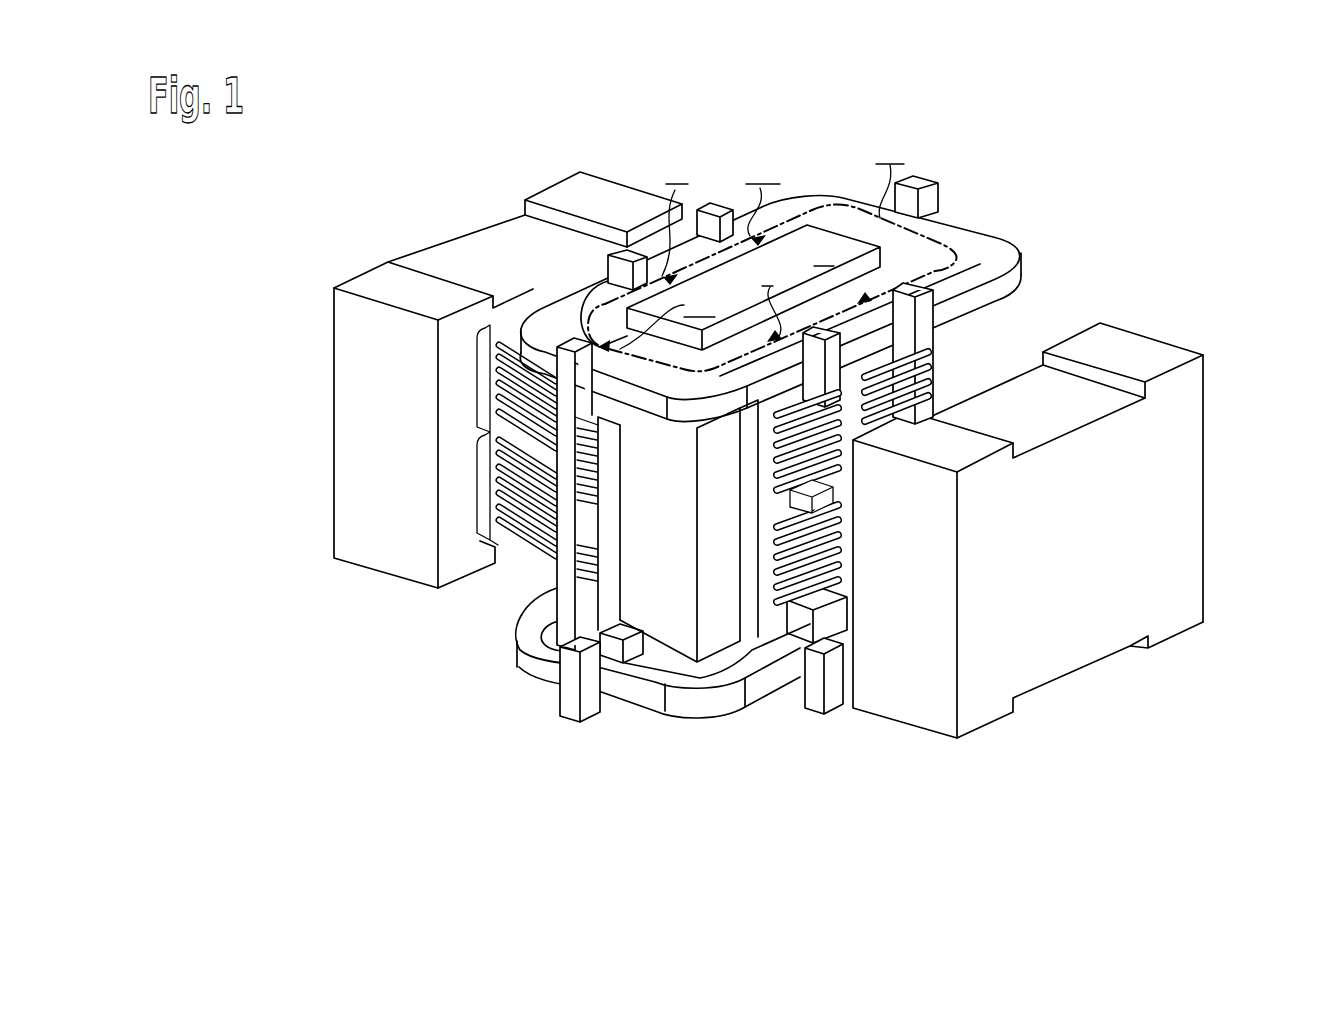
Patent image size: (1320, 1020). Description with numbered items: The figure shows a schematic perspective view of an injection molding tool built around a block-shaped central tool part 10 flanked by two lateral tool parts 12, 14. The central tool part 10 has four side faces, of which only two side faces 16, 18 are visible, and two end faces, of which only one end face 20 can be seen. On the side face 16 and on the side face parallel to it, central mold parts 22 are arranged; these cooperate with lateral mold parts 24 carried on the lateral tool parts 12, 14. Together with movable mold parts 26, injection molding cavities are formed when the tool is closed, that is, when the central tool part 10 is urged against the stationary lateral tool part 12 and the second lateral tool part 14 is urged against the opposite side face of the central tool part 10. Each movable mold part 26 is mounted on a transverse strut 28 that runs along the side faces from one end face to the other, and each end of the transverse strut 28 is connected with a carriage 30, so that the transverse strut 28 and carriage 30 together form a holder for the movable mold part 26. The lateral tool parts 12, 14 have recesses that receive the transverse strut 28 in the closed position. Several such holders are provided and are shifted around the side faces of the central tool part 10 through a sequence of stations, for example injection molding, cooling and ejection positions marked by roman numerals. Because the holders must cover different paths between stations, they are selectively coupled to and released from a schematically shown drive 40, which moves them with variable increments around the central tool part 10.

The central tool part 10 is at (1110, 210).
The lateral tool part 12 is at (1198, 467).
The lateral tool part 14 is at (352, 420).
The side face 16 is at (726, 627).
The side face 18 is at (680, 624).
The end face 20 is at (927, 246).
The central mold part 22 is at (932, 368).
The lateral mold part 24 is at (496, 512).
The movable mold part 26 is at (607, 508).
The transverse strut 28 is at (570, 593).
The carriage 30 is at (575, 345).
The drive 40 is at (790, 250).